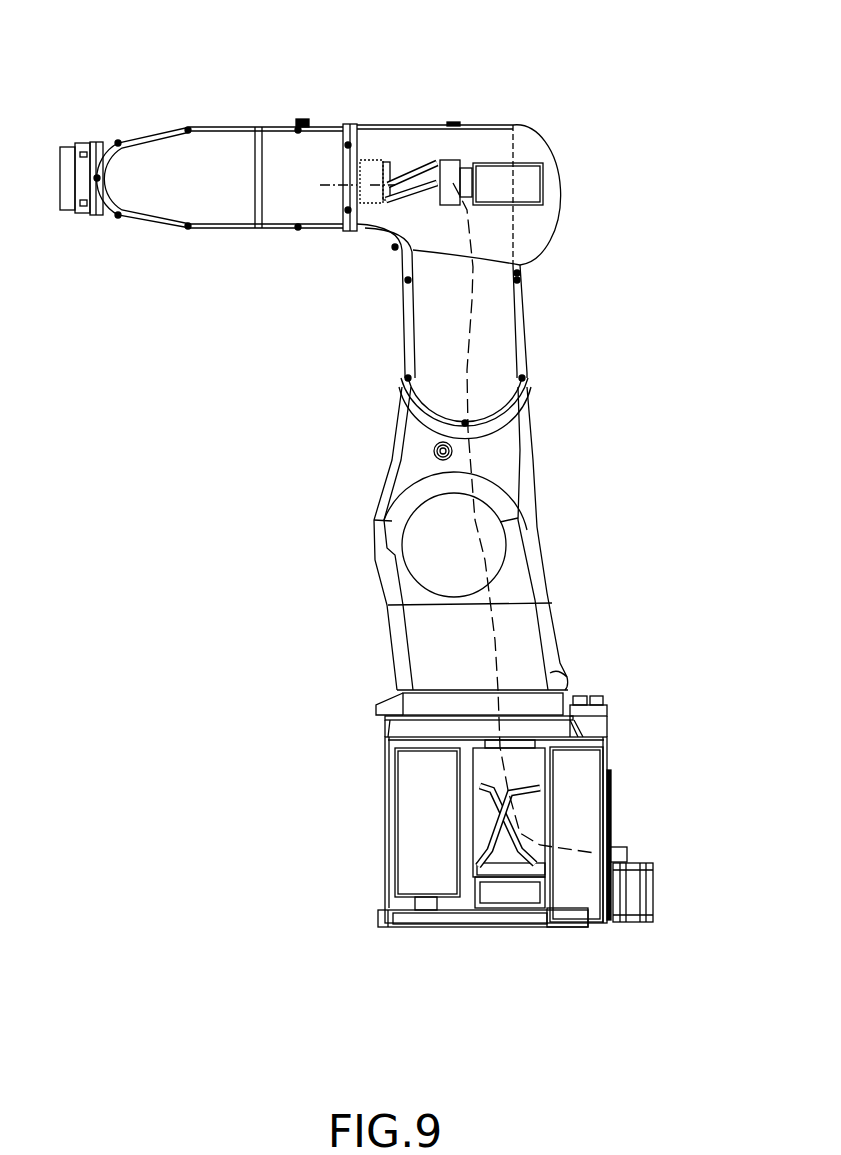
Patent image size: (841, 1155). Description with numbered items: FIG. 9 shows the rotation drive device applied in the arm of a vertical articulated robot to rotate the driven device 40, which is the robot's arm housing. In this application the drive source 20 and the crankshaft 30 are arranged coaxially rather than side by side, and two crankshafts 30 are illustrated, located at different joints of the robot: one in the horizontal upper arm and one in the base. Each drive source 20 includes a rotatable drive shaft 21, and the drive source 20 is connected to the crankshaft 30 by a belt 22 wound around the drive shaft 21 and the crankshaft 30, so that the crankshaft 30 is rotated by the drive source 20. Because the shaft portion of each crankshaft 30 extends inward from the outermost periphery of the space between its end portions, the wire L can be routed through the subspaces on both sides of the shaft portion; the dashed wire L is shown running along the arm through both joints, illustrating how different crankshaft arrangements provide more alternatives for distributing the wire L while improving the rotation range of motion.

The driven device 40 is at (270, 118).
The crankshaft 30 is at (409, 155).
The drive source 20 is at (525, 155).
The drive shaft 21 is at (473, 182).
The belt 22 is at (460, 913).
The wire L is at (468, 342).